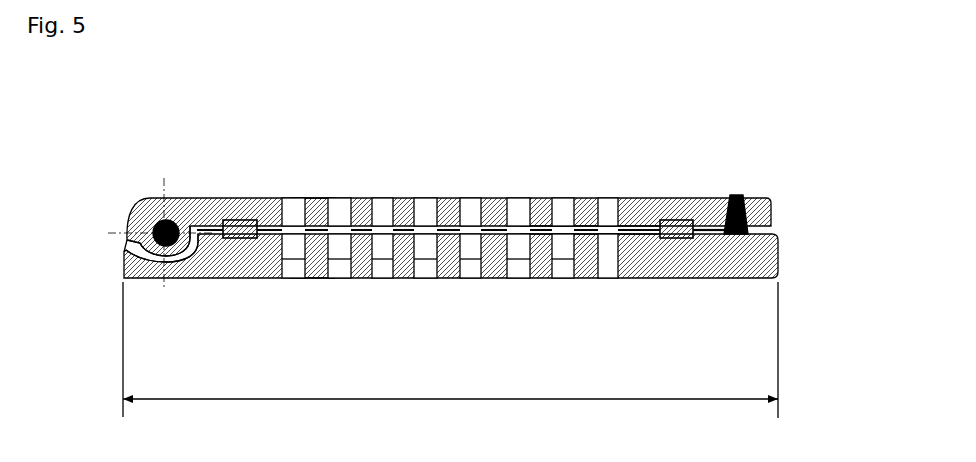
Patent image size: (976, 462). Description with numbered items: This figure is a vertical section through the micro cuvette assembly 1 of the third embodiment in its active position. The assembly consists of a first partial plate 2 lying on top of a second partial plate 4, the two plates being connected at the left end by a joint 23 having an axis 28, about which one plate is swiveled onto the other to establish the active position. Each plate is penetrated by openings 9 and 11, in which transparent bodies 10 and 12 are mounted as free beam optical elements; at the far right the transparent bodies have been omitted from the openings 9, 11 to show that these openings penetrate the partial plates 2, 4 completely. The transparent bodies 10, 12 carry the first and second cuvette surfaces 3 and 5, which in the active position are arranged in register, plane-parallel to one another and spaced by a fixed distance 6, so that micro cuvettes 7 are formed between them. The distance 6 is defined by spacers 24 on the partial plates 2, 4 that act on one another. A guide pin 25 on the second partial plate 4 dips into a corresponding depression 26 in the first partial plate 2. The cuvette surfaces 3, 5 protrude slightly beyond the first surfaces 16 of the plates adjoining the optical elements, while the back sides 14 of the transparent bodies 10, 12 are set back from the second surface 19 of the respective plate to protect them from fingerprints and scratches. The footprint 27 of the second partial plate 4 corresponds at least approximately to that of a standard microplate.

The micro cuvette assembly 1 is at (435, 267).
The first partial plate 2 is at (262, 210).
The first cuvette surfaces 3 is at (337, 231).
The second partial plate 4 is at (262, 258).
The second cuvette surfaces 5 is at (378, 226).
The distance 6 is at (438, 244).
The micro cuvettes 7 is at (562, 262).
The opening 9 is at (606, 210).
The transparent bodies 10 is at (462, 210).
The opening 11 is at (608, 255).
The transparent bodies 12 is at (522, 247).
The back sides 14 is at (562, 198).
The first surfaces 16 is at (538, 229).
The second surface 19 is at (312, 198).
The joint 23 is at (165, 258).
The spacers 24 is at (240, 220).
The guide pins 25 is at (743, 196).
The depressions 26 is at (722, 224).
The footprint 27 is at (450, 350).
The axis 28 is at (143, 257).